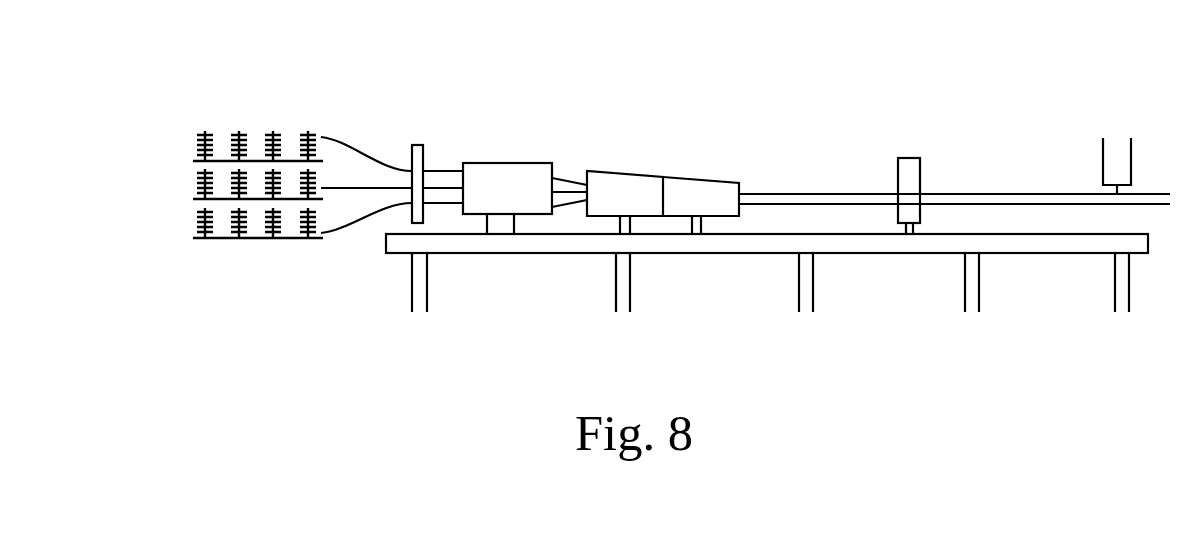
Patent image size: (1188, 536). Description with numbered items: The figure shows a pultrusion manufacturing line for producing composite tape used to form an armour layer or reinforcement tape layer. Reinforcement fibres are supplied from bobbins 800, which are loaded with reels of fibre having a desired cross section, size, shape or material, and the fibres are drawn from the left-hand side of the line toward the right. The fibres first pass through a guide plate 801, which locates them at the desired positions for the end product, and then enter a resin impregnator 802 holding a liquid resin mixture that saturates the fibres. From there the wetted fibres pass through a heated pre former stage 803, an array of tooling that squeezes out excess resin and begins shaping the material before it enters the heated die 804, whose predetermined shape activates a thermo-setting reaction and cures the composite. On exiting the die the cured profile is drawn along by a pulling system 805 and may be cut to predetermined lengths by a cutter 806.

The bobbins 800 is at (208, 240).
The guide plate 801 is at (416, 145).
The resin impregnator 802 is at (507, 163).
The heated pre former stage 803 is at (621, 172).
The die 804 is at (703, 190).
The pulling system 805 is at (910, 158).
The cutter 806 is at (1117, 145).